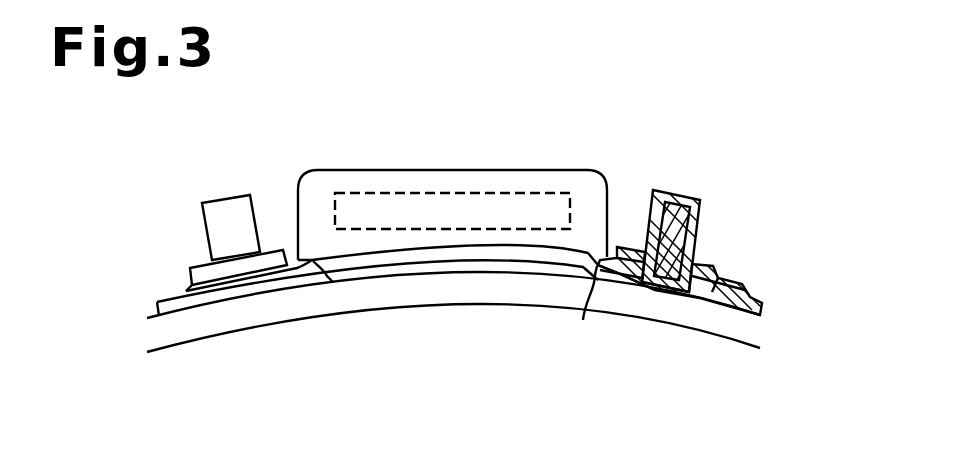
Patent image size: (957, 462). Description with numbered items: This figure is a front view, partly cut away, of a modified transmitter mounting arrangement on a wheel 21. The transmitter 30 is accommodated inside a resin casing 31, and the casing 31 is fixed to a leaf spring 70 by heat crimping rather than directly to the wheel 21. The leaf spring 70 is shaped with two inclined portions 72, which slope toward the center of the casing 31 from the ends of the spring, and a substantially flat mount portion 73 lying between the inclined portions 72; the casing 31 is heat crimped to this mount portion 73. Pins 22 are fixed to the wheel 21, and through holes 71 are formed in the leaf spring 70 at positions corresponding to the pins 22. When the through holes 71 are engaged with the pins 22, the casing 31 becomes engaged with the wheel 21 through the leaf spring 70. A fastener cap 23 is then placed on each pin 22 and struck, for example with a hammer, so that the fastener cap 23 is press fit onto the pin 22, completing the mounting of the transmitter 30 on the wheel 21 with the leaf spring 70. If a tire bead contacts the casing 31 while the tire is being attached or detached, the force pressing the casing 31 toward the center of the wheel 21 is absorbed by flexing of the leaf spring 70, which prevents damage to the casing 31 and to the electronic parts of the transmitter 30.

The wheel 21 is at (717, 327).
The pin 22 is at (680, 225).
The fastener cap 23 is at (676, 201).
The transmitter 30 is at (400, 192).
The resin casing 31 is at (520, 170).
The leaf spring 70 is at (500, 255).
The through hole 71 is at (690, 280).
The inclined portion 72 is at (322, 272).
The mount portion 73 is at (441, 253).